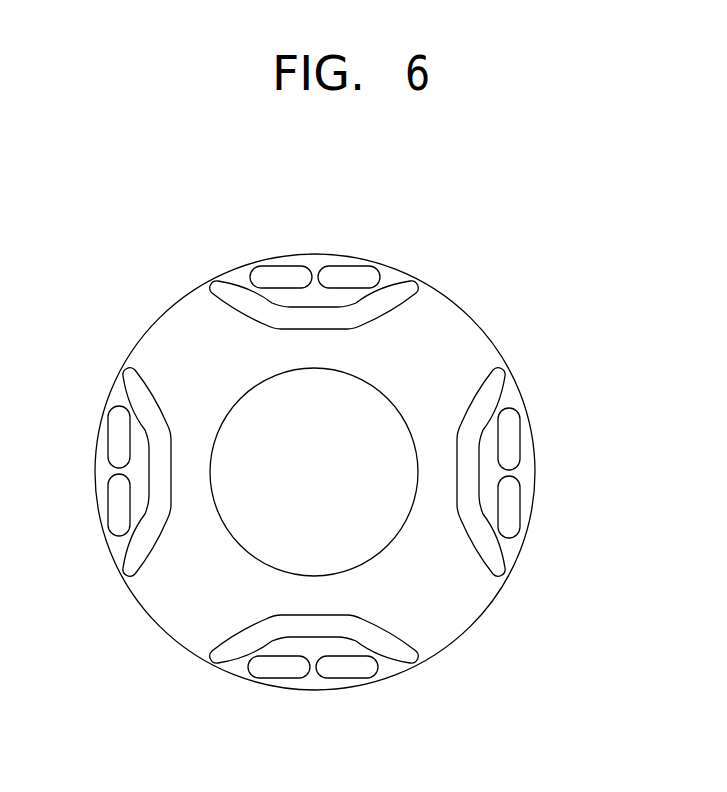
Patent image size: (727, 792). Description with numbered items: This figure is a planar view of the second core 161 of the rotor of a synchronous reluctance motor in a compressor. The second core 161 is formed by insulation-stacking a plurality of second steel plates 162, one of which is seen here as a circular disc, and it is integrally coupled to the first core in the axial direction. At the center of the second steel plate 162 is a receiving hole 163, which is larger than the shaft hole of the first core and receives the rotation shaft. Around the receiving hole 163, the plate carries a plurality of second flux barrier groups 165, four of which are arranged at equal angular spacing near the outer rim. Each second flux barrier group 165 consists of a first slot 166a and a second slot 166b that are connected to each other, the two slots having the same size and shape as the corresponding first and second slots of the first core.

The second core 161 is at (121, 304).
The second steel plate 162 is at (453, 337).
The receiving hole 163 is at (395, 523).
The second flux barrier group 165 is at (503, 215).
The first slot 166a is at (377, 268).
The second slot 166b is at (414, 287).